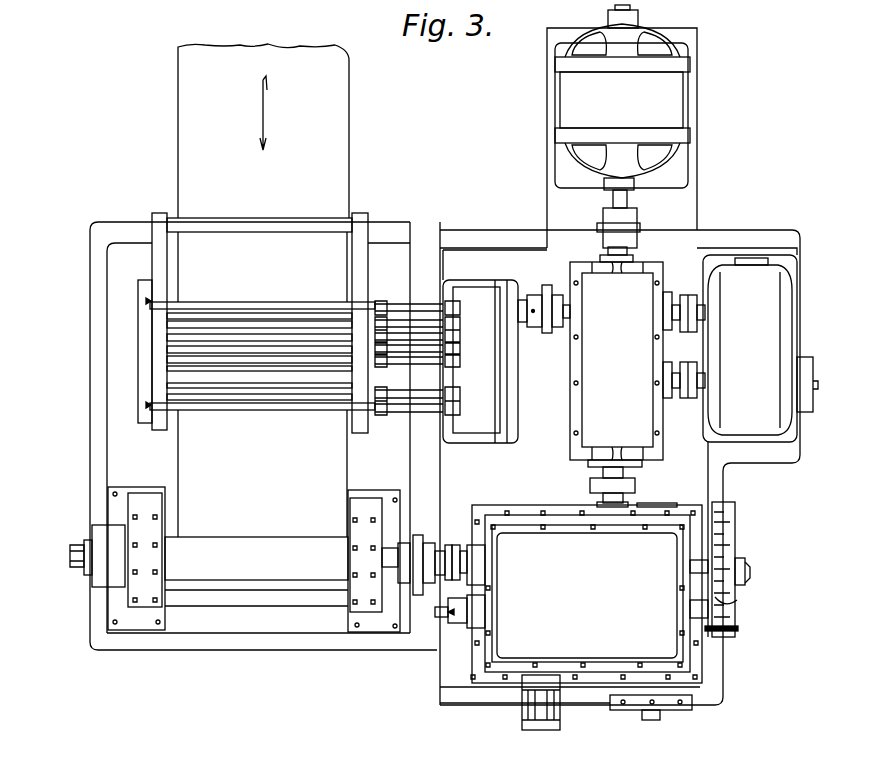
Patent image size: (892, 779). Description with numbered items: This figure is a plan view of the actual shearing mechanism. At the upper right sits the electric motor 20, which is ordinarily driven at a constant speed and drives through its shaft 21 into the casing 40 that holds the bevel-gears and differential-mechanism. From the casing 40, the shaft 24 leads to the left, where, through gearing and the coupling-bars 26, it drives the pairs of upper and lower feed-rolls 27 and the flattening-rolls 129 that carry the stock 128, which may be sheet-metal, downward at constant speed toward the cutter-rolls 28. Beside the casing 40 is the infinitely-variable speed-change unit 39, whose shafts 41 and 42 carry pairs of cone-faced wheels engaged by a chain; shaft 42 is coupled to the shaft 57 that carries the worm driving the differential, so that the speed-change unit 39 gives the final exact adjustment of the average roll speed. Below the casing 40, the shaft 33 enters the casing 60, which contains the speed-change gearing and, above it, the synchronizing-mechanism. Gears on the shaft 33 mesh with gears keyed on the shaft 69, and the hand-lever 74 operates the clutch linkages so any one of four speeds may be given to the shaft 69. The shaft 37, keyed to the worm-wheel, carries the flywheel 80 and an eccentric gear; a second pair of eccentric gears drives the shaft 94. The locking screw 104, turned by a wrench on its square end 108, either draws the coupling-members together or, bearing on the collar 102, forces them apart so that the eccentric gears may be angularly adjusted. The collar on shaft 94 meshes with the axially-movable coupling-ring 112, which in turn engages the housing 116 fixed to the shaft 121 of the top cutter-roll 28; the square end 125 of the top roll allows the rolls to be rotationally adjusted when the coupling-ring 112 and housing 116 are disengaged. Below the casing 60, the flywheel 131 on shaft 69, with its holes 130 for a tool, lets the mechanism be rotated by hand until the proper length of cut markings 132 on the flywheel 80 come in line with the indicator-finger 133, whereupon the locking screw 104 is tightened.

The electric motor 20 is at (685, 100).
The shaft 21 is at (598, 248).
The shaft 24 is at (530, 300).
The coupling-bars 26 is at (426, 318).
The feed-rolls 27 is at (288, 392).
The cutter-rolls 28 is at (284, 520).
The shaft 33 is at (600, 472).
The shaft 37 is at (752, 570).
The speed-change unit 39 is at (762, 428).
The casing 40 is at (572, 400).
The shaft 41 is at (702, 300).
The shaft 42 is at (813, 390).
The shaft 57 is at (666, 397).
The casing 60 is at (598, 600).
The shaft 69 is at (652, 720).
The hand-lever 74 is at (560, 712).
The flywheel 80 is at (735, 525).
The shaft 94 is at (456, 545).
The collar 102 is at (457, 630).
The locking screw 104 is at (450, 624).
The square end 108 is at (437, 607).
The coupling-ring 112 is at (446, 545).
The housing 116 is at (420, 532).
The shaft 121 is at (392, 548).
The square end 125 is at (68, 564).
The stock 128 is at (349, 144).
The flattening-rolls 129 is at (257, 318).
The holes 130 is at (623, 708).
The flywheel 131 is at (678, 708).
The length of cut markings 132 is at (737, 604).
The indicator-finger 133 is at (740, 630).